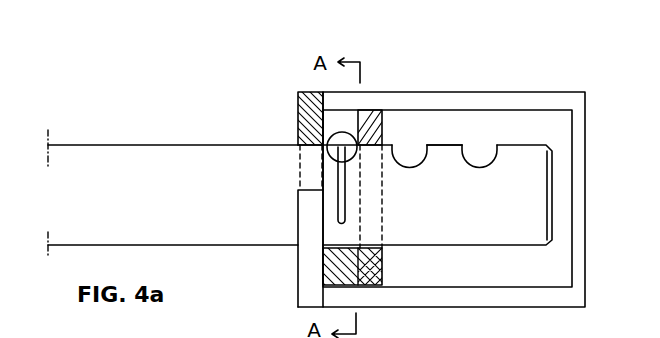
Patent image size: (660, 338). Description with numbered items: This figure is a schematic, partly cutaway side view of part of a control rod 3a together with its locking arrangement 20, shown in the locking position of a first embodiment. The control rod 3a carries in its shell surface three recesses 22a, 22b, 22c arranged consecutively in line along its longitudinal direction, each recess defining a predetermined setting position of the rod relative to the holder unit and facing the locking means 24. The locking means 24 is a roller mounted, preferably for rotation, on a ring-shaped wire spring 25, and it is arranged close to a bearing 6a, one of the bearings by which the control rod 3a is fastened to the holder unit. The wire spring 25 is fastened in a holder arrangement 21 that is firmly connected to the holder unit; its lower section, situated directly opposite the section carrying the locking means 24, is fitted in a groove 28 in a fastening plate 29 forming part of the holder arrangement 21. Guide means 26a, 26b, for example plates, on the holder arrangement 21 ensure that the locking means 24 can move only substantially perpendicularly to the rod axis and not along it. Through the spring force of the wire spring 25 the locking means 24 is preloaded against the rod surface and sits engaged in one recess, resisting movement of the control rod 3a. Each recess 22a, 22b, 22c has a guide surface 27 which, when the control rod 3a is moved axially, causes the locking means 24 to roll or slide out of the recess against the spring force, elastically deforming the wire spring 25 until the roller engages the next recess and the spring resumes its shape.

The control rod 3a is at (100, 158).
The bearing 6a is at (310, 141).
The locking arrangement 20 is at (381, 53).
The holder arrangement 21 is at (398, 100).
The recess 22a is at (333, 157).
The recess 22b is at (413, 160).
The recess 22c is at (490, 160).
The locking means 24 is at (344, 132).
The wire spring 25 is at (345, 200).
The guide means 26a is at (313, 124).
The guide means 26b is at (374, 131).
The guide surface 27 is at (466, 167).
The groove 28 is at (358, 268).
The fastening plate 29 is at (297, 278).